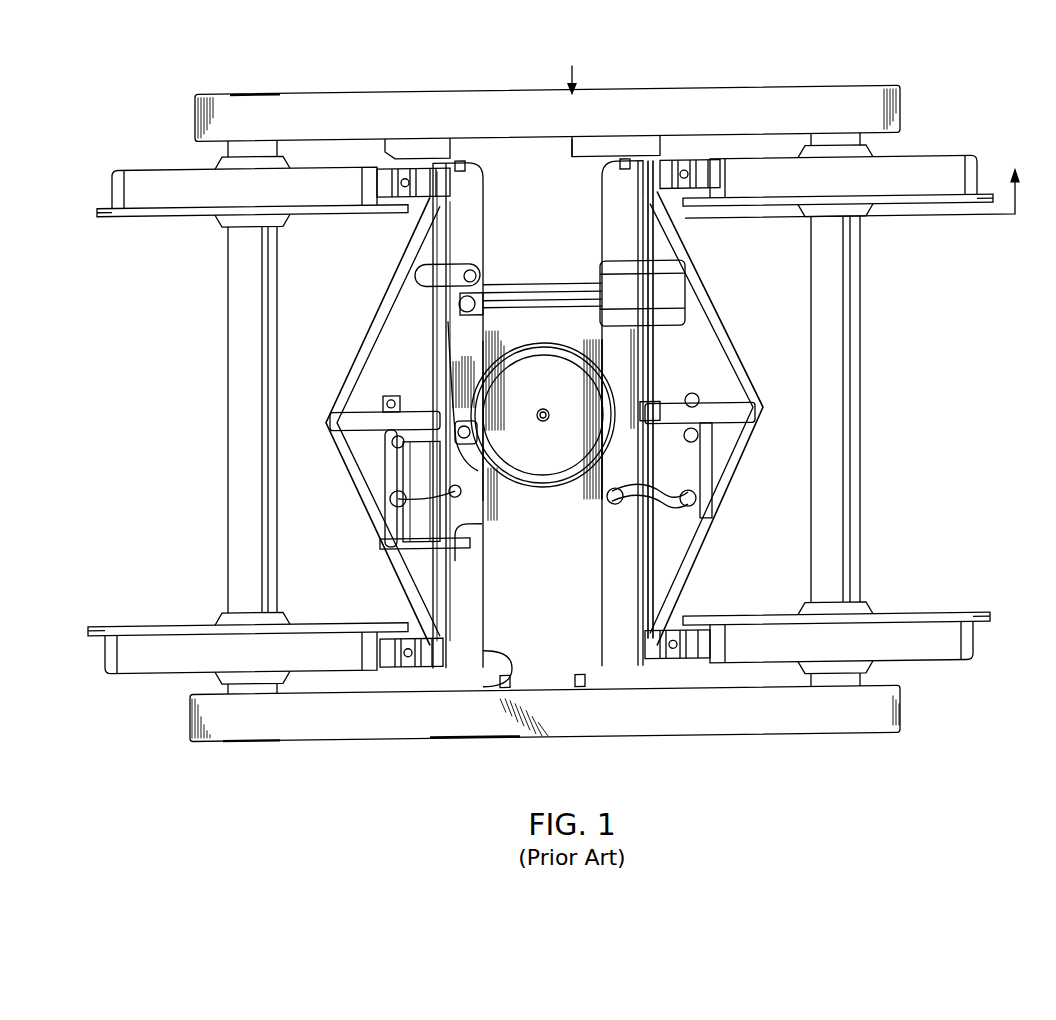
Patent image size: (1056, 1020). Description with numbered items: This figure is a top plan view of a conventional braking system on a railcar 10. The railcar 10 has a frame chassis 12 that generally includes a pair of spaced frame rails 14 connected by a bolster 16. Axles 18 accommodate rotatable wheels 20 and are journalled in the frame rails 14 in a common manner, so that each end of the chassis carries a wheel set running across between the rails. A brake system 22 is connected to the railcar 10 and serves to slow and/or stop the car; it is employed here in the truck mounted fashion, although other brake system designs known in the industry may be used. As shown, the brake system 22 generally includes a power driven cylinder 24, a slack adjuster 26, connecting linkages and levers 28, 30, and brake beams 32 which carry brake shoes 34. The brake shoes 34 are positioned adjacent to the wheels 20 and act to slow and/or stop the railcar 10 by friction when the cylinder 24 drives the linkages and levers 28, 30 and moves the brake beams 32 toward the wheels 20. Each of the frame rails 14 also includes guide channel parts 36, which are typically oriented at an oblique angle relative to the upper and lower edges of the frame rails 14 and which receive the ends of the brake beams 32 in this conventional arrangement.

The railcar 10 is at (968, 116).
The frame chassis 12 is at (746, 93).
The frame rails 14 is at (663, 108).
The bolster 16 is at (578, 593).
The axles 18 is at (228, 466).
The wheels 20 is at (150, 192).
The brake system 22 is at (724, 292).
The power driven cylinder 24 is at (668, 318).
The slack adjuster 26 is at (660, 400).
The connecting linkages and levers 28 is at (378, 478).
The connecting linkages and levers 30 is at (713, 467).
The brake beams 32 is at (358, 345).
The brake shoes 34 is at (717, 162).
The guide channel parts 36 is at (460, 140).